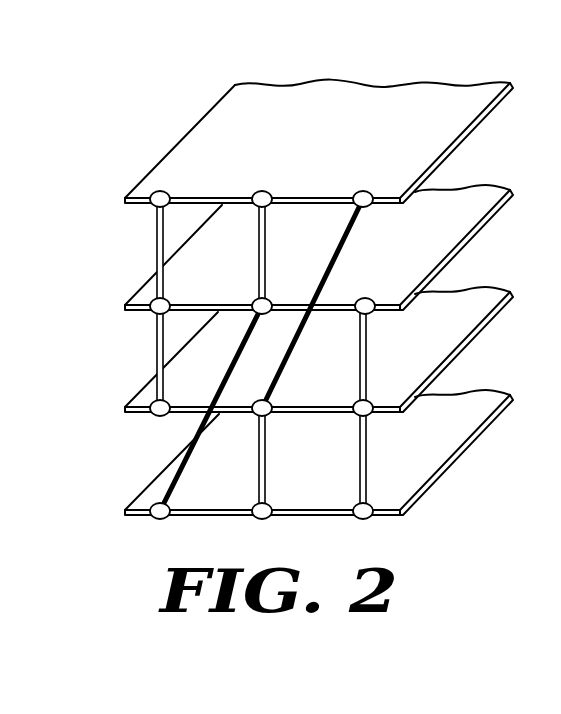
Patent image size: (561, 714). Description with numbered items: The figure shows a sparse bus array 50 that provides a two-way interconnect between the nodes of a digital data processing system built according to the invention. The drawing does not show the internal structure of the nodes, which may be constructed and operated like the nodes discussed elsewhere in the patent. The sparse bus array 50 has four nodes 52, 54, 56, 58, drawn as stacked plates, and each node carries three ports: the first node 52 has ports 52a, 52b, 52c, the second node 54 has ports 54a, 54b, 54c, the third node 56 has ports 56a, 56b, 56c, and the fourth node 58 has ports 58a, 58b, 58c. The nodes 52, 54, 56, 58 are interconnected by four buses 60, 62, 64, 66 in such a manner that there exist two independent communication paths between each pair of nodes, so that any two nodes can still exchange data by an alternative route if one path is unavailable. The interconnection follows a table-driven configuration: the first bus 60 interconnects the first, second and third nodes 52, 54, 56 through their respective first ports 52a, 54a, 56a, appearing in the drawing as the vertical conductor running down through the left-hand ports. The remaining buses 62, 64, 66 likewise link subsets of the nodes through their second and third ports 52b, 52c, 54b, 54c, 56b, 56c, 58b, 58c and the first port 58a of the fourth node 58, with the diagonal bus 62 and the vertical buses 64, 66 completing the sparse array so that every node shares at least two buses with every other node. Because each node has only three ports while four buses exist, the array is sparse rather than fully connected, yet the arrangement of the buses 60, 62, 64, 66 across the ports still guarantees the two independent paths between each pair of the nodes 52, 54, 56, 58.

The sparse bus array 50 is at (285, 299).
The node 52 is at (440, 119).
The node 54 is at (443, 229).
The node 56 is at (443, 337).
The node 58 is at (448, 434).
The port 52a is at (163, 194).
The port 52b is at (264, 194).
The port 52c is at (363, 194).
The port 54a is at (163, 300).
The port 54b is at (264, 300).
The port 54c is at (365, 300).
The port 56a is at (163, 402).
The port 56b is at (265, 402).
The port 56c is at (365, 402).
The port 58a is at (163, 505).
The port 58b is at (264, 505).
The port 58c is at (365, 505).
The bus 60 is at (157, 250).
The bus 62 is at (168, 484).
The bus 64 is at (259, 447).
The bus 66 is at (360, 447).